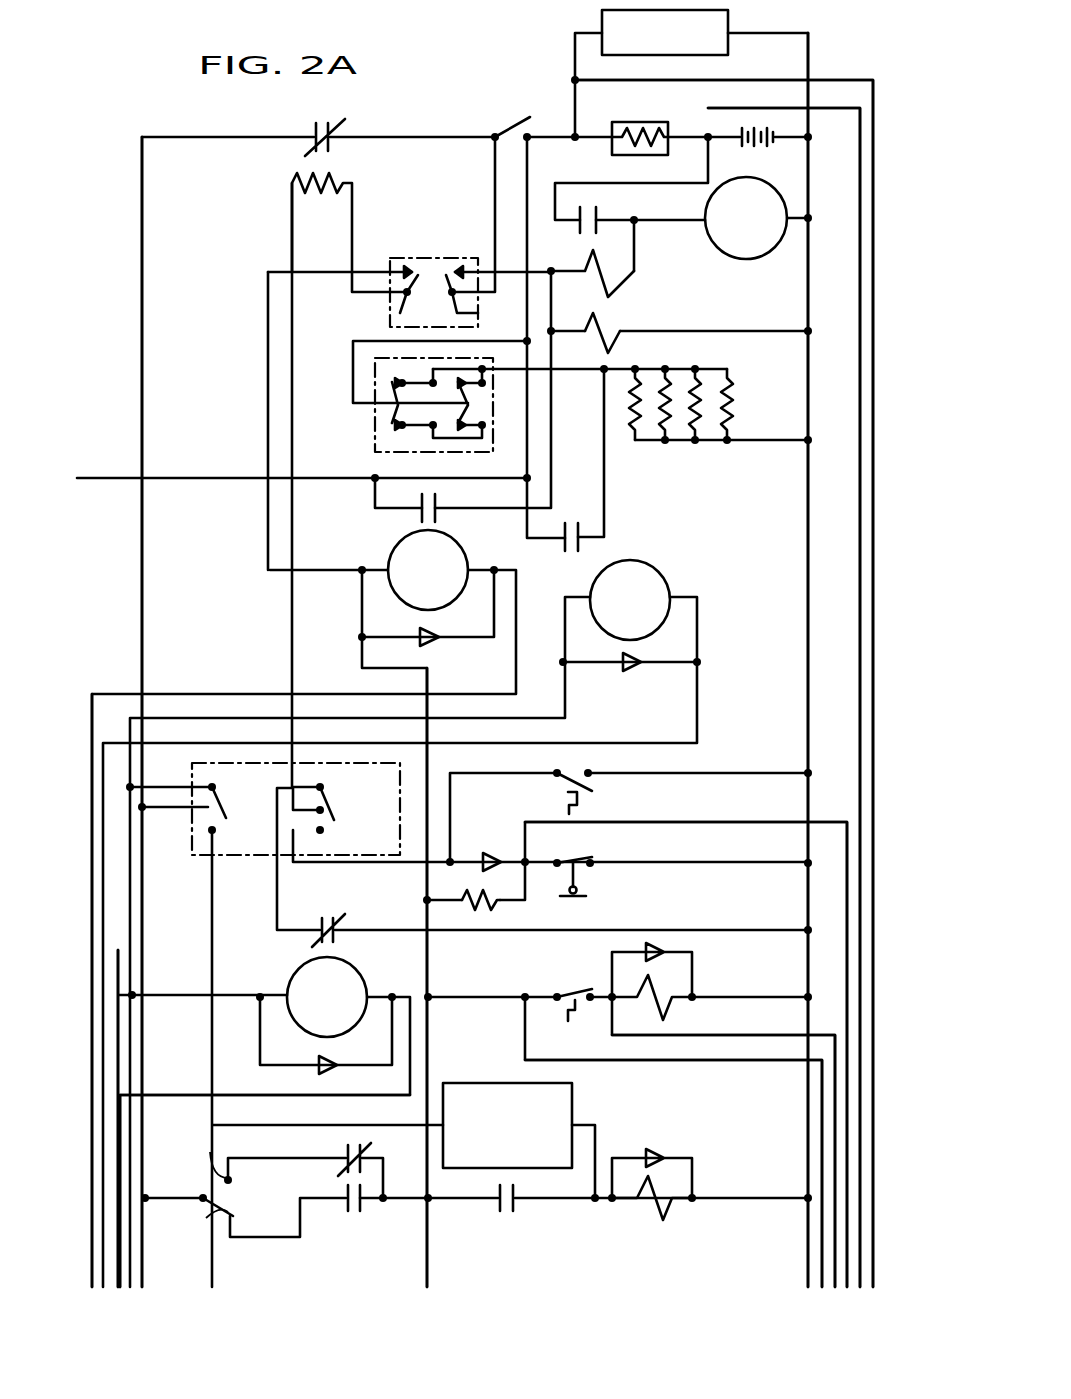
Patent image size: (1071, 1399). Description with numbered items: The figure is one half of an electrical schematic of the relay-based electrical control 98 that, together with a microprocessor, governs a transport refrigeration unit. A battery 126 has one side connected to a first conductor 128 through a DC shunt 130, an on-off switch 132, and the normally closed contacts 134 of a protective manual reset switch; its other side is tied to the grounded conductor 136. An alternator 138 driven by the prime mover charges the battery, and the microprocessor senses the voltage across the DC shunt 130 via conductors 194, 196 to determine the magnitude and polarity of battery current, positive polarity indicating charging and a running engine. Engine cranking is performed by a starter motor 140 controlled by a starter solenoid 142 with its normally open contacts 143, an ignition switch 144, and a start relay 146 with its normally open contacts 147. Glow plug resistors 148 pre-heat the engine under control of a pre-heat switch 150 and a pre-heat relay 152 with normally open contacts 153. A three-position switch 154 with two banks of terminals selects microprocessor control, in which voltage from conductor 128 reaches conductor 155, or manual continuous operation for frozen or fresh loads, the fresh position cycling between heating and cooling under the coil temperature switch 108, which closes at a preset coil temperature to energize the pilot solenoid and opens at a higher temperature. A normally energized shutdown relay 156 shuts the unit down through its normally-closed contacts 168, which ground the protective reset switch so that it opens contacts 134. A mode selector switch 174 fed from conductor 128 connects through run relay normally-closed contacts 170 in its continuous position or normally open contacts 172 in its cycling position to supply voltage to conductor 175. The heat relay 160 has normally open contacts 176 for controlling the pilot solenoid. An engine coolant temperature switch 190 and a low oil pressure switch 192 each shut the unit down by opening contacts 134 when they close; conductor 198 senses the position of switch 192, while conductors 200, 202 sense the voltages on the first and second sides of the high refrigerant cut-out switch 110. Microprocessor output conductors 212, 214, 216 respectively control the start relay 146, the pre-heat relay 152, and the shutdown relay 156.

The electrical control 98 is at (410, 120).
The coil temperature switch 108 is at (573, 1103).
The high refrigerant cut-out switch (HPCO) 110 is at (576, 1003).
The battery 126 is at (757, 152).
The first conductor 128 is at (140, 150).
The DC shunt 130 is at (649, 122).
The on-off switch 132 is at (516, 121).
The normally closed contacts 134 is at (316, 122).
The conductor 136 is at (810, 180).
The alternator 138 is at (733, 22).
The starter motor 140 is at (755, 258).
The starter solenoid 142 is at (589, 316).
The normally open contacts 143 is at (590, 212).
The ignition switch 144 is at (426, 257).
The start relay 146 is at (509, 559).
The normally open contacts 147 is at (416, 512).
The glow plug resistors 148 is at (738, 390).
The pre-heat switch 150 is at (375, 436).
The pre-heat relay 152 is at (705, 583).
The normally open contacts 153 is at (584, 525).
The three-position switch 154 is at (247, 856).
The conductor 155 is at (118, 956).
The shutdown relay 156 is at (410, 980).
The heat relay 160 is at (567, 1241).
The normally-closed contacts 168 is at (330, 912).
The normally-closed contacts 170 is at (352, 1158).
The normally open contacts 172 is at (356, 1212).
The mode selector switch 174 is at (190, 1184).
The conductor 175 is at (429, 1025).
The normally open contacts 176 is at (505, 1212).
The engine coolant temperature switch (HWT) 190 is at (566, 782).
The low oil pressure switch (LOPS) 192 is at (584, 870).
The conductor 194 is at (818, 80).
The conductor 196 is at (832, 108).
The conductor 198 is at (735, 822).
The conductor 200 is at (490, 906).
The conductor 202 is at (742, 1060).
The output conductor 212 is at (93, 1273).
The output conductor 214 is at (147, 1256).
The output conductor 216 is at (155, 1095).